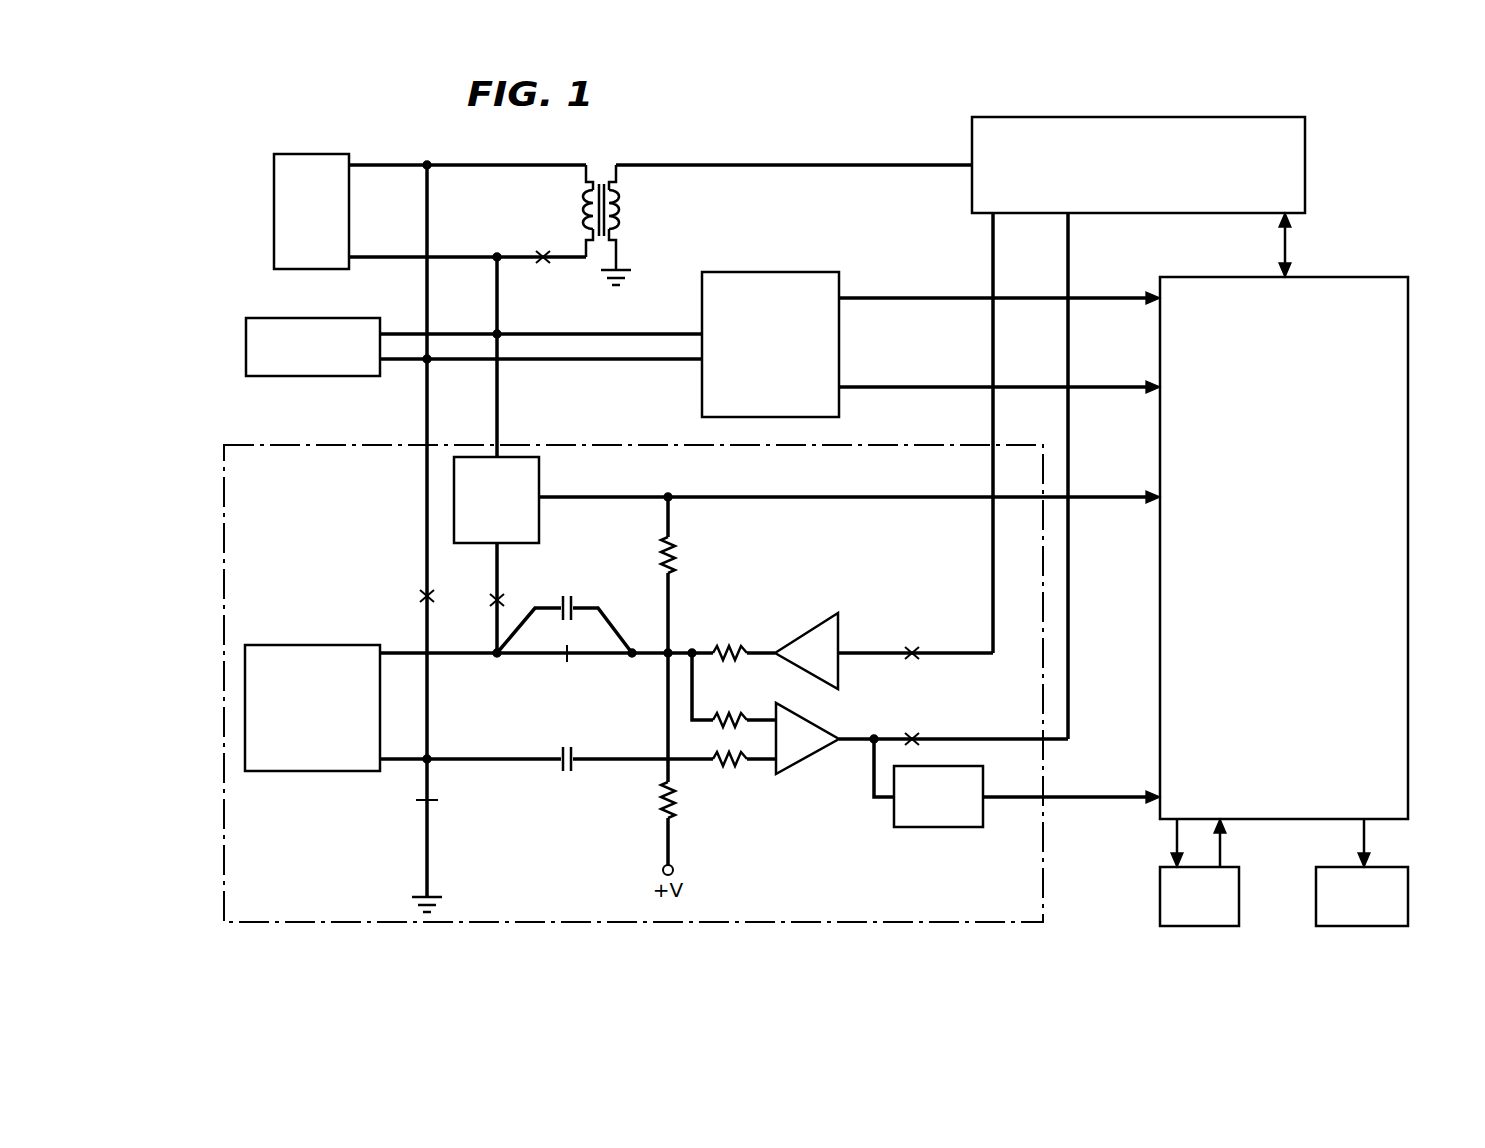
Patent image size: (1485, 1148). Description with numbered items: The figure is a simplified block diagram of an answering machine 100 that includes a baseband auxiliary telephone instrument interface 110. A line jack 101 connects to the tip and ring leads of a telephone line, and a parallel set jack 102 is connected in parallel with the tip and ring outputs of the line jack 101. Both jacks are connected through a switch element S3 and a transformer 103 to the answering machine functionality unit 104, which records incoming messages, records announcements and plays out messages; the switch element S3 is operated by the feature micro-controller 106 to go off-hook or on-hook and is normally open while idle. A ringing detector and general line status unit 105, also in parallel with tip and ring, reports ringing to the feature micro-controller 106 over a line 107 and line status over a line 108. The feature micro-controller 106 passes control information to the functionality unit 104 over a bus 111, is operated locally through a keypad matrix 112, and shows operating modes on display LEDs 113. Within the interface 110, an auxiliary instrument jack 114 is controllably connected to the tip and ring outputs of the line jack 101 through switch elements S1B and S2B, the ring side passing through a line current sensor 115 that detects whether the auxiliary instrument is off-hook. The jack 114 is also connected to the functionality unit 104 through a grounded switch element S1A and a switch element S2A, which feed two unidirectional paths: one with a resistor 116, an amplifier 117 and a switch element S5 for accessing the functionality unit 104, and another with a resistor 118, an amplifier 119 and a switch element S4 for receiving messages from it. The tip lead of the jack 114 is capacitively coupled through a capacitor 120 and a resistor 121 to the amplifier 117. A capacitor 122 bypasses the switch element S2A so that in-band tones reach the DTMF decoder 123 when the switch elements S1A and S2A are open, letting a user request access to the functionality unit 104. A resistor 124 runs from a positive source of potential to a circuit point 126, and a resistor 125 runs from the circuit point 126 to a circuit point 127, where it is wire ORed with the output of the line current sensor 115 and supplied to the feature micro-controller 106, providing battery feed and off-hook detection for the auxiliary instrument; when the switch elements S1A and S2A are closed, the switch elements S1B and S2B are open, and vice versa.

The answering machine 100 is at (691, 117).
The line jack 101 is at (274, 193).
The parallel set jack 102 is at (246, 343).
The transformer 103 is at (602, 163).
The answering machine functionality unit 104 is at (1035, 117).
The ringing detector and general line status unit 105 is at (733, 272).
The feature micro-controller 106 is at (1398, 277).
The line 107 is at (901, 298).
The line 108 is at (908, 387).
The baseband auxiliary telephone instrument interface 110 is at (224, 510).
The bus 111 is at (1285, 250).
The keypad matrix 112 is at (1239, 892).
The display LEDs 113 is at (1408, 899).
The auxiliary instrument jack 114 is at (294, 645).
The line current sensor 115 is at (539, 478).
The resistor 116 is at (730, 717).
The amplifier 117 is at (809, 768).
The resistor 118 is at (730, 648).
The amplifier 119 is at (820, 625).
The capacitor 120 is at (569, 746).
The resistor 121 is at (730, 768).
The capacitor 122 is at (568, 597).
The DTMF decoder 123 is at (918, 827).
The resistor 124 is at (662, 808).
The resistor 125 is at (678, 552).
The circuit point 126 is at (678, 643).
The circuit point 127 is at (668, 494).
The switch element S1A is at (405, 801).
The switch element S1B is at (410, 584).
The switch element S2A is at (568, 669).
The switch element S2B is at (518, 591).
The switch element S3 is at (542, 244).
The switch element S4 is at (912, 638).
The switch element S5 is at (912, 725).